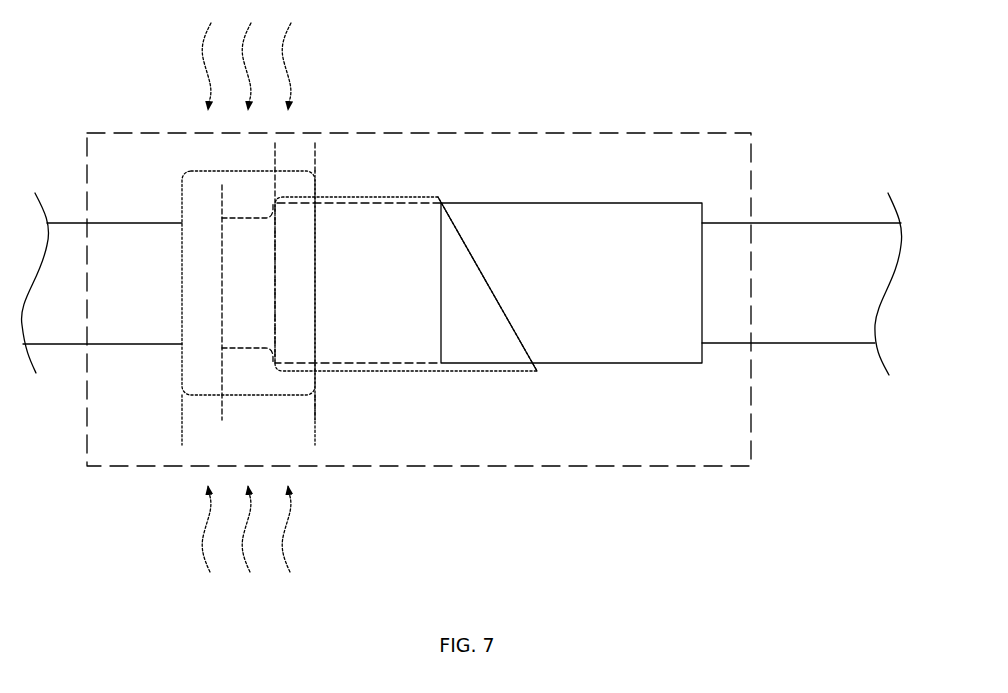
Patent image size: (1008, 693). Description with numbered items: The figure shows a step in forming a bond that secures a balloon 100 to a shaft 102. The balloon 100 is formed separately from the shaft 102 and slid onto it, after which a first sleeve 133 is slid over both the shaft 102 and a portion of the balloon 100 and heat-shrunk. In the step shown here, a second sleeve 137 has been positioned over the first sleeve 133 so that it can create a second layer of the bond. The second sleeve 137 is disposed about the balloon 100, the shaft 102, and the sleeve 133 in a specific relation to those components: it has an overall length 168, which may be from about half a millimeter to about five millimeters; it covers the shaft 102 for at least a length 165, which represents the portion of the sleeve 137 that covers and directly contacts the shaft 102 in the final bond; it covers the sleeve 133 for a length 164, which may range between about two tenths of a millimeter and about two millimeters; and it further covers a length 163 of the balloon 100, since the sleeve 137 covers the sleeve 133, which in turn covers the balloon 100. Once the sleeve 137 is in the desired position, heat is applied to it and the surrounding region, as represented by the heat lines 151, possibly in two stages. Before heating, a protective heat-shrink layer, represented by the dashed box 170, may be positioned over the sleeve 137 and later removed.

The balloon 100 is at (580, 213).
The shaft 102 is at (158, 330).
The sleeve 133 is at (395, 197).
The second sleeve 137 is at (315, 285).
The heat lines 151 is at (288, 60).
The length 163 is at (237, 151).
The length 164 is at (314, 417).
The length 165 is at (262, 193).
The overall length 168 is at (314, 443).
The dashed box 170 is at (578, 131).